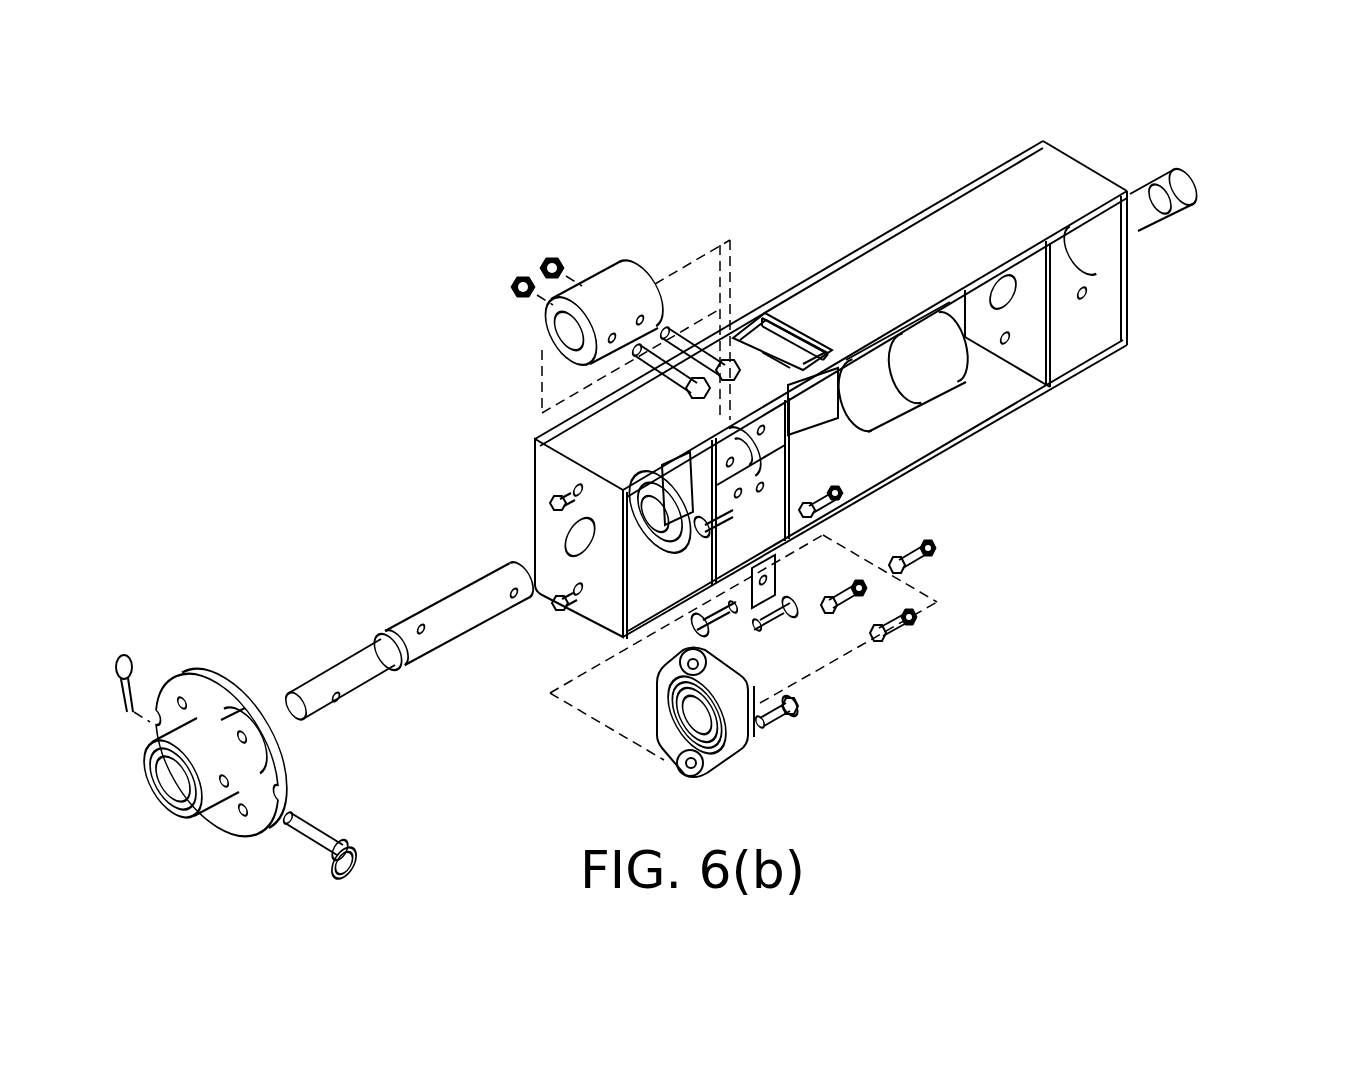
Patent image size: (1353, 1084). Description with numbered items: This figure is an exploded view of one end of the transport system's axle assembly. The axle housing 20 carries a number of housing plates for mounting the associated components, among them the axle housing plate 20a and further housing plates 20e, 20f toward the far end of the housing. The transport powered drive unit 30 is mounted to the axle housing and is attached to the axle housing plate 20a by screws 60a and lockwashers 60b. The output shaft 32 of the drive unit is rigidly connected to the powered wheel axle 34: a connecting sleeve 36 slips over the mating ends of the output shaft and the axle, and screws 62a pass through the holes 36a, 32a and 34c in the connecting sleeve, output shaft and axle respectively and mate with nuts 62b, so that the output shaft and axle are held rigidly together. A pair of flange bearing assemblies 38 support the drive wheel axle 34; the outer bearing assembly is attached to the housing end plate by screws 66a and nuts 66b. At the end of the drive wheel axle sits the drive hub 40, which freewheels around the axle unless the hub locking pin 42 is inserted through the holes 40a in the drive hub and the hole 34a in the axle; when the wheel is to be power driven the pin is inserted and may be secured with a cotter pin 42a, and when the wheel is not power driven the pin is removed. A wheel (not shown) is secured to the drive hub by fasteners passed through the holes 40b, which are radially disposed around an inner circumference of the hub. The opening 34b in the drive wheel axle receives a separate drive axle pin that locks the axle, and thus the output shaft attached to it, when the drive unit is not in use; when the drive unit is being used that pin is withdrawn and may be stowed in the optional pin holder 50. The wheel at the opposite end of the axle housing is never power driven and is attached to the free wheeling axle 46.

The axle housing 20 is at (890, 267).
The axle housing plate 20a is at (800, 365).
The partition plate 20e is at (1053, 367).
The end plate 20f is at (1128, 293).
The transport powered drive unit 30 is at (924, 370).
The output shaft 32 is at (746, 432).
The hole 32a is at (848, 493).
The drive wheel axle 34 is at (397, 633).
The hole 34a is at (338, 700).
The opening 34b is at (420, 626).
The hole 34c is at (517, 580).
The connecting sleeve 36 is at (622, 283).
The holes 36a is at (643, 318).
The flange bearing assemblies 38 is at (740, 747).
The drive hub 40 is at (210, 697).
The holes 40a is at (227, 782).
The holes 40b is at (182, 703).
The hub locking pin 42 is at (314, 840).
The cotter pin 42a is at (134, 652).
The free wheeling axle 46 is at (1174, 193).
The pin holder 50 is at (777, 586).
The screws 60a is at (912, 620).
The lockwashers 60b is at (932, 552).
The screws 62a is at (680, 385).
The nuts 62b is at (518, 276).
The screws 66a is at (782, 721).
The nuts 66b is at (560, 612).